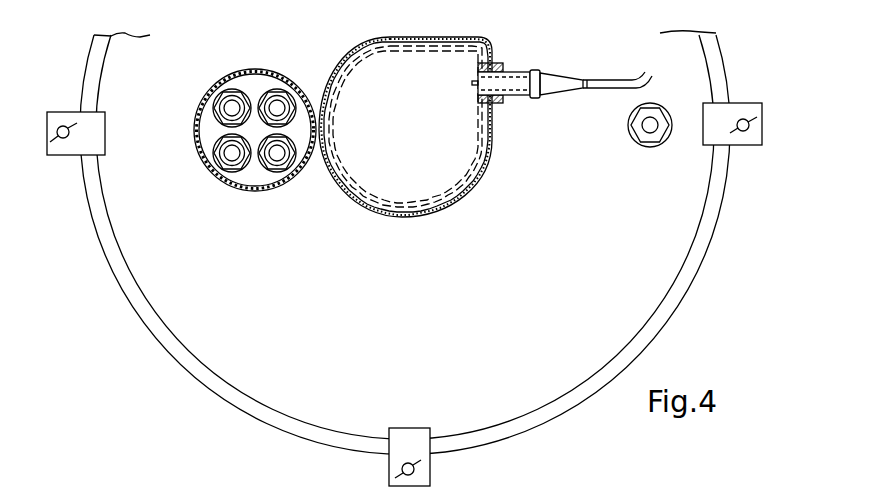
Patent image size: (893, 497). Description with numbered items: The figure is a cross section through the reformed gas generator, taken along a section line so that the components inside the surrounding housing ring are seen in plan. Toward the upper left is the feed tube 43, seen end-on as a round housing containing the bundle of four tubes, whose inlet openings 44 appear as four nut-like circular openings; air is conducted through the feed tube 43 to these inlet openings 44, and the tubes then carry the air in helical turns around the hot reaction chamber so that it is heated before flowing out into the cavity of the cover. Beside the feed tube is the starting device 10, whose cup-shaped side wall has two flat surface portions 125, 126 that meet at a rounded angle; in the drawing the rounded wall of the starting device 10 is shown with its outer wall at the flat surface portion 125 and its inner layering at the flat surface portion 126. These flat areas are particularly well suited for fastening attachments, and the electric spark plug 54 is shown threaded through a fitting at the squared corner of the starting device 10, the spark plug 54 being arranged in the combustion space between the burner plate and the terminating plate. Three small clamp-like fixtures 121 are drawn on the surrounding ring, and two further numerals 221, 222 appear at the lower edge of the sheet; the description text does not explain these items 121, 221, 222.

The starting device 10 is at (522, 194).
The feed tube 43 is at (194, 133).
The inlet openings 44 is at (276, 107).
The electric spark plug 54 is at (534, 73).
The clamps 121 is at (63, 126).
The flat surface portion 125 is at (362, 206).
The flat surface portion 126 is at (492, 129).
The support 221 is at (356, 492).
The support 222 is at (580, 492).